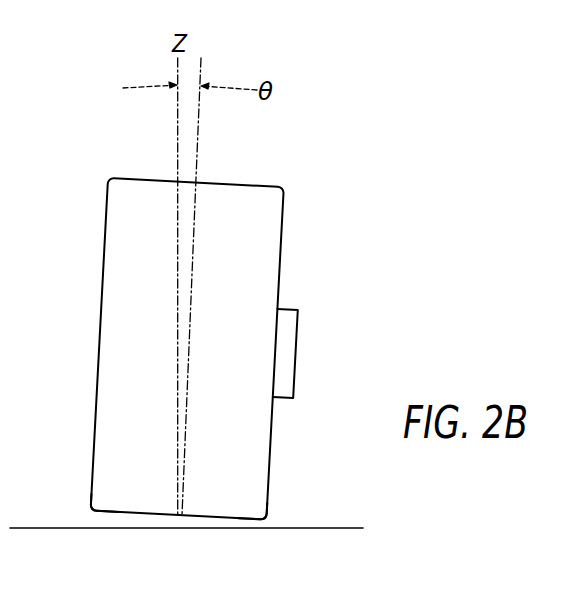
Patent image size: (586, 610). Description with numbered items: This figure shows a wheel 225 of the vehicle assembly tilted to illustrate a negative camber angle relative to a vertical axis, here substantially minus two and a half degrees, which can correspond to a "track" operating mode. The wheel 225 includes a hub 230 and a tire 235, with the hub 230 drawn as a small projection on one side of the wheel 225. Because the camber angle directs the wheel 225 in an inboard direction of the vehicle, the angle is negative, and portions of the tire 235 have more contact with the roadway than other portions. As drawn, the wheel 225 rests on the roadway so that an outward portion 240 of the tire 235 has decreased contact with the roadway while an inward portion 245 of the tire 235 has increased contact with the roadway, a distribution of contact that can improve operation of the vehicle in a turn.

The wheel 225 is at (103, 129).
The hub 230 is at (292, 308).
The tire 235 is at (248, 185).
The outward portion 240 is at (113, 514).
The inward portion 245 is at (217, 521).